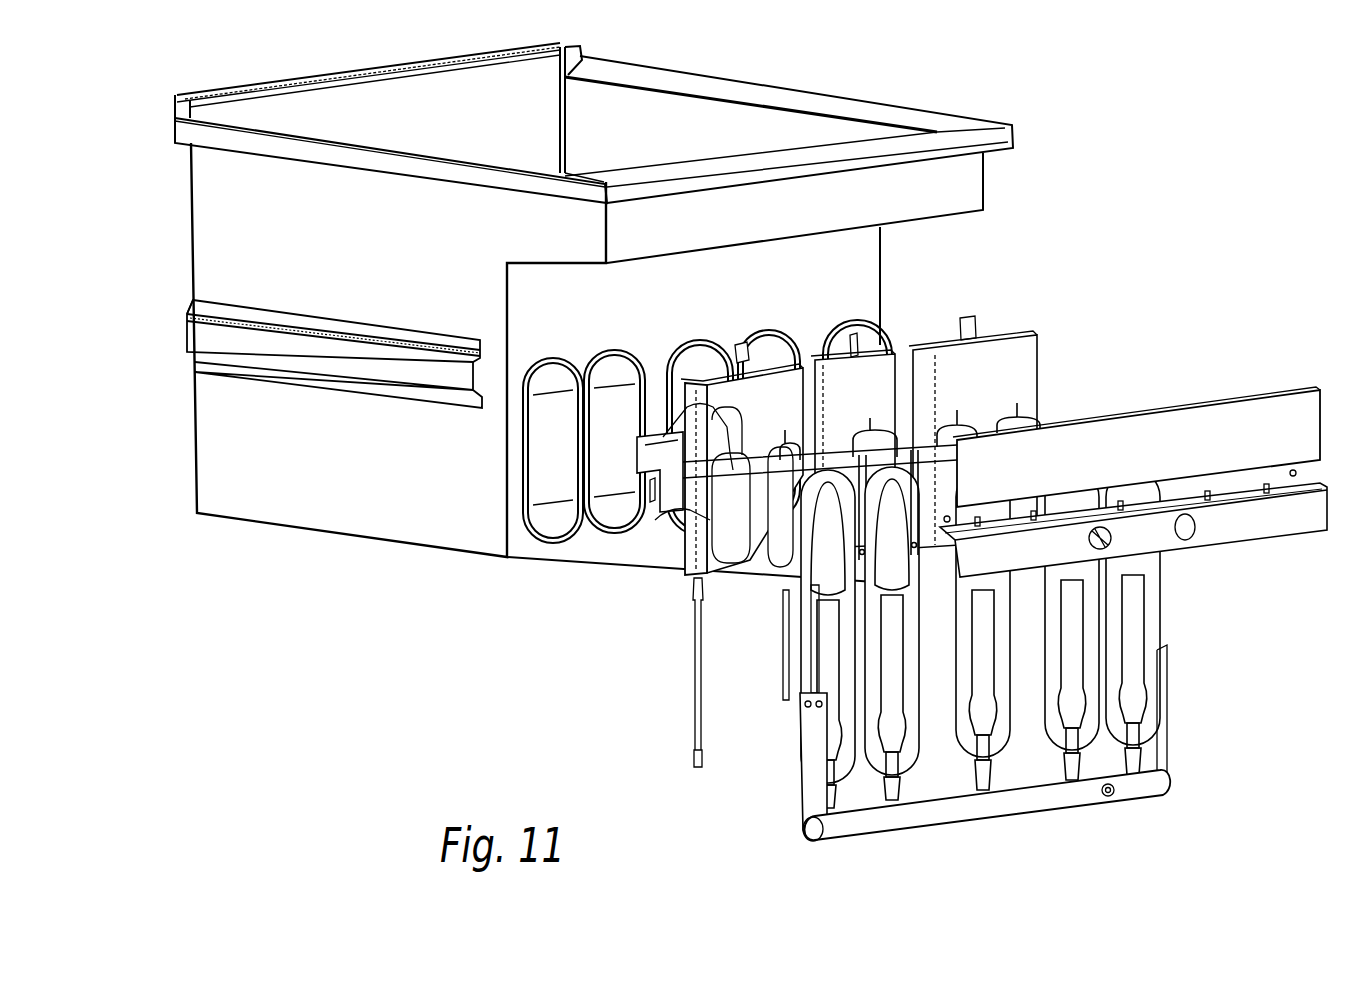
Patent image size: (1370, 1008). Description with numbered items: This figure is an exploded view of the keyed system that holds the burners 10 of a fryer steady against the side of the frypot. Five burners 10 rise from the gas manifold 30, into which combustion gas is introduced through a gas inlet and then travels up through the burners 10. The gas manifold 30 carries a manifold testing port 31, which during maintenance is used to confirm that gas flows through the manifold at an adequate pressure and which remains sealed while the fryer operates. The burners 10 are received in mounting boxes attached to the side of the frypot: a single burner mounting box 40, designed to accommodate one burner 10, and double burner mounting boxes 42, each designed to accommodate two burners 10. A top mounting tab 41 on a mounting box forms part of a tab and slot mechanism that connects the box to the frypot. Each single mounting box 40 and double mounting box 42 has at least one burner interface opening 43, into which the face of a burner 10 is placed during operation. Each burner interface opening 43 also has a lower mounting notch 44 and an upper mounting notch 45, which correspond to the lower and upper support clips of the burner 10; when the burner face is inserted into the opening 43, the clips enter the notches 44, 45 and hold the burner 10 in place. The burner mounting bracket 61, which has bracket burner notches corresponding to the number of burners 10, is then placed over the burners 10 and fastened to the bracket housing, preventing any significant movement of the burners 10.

The burner 10 is at (925, 788).
The gas manifold 30 is at (1160, 790).
The manifold testing port 31 is at (1113, 797).
The single burner mounting box 40 is at (877, 373).
The top mounting tab 41 is at (740, 348).
The double burner mounting box 42 is at (697, 560).
The burner interface opening 43 is at (690, 520).
The lower mounting notch 44 is at (737, 573).
The upper mounting notch 45 is at (700, 398).
The burner mounting bracket 61 is at (1242, 400).